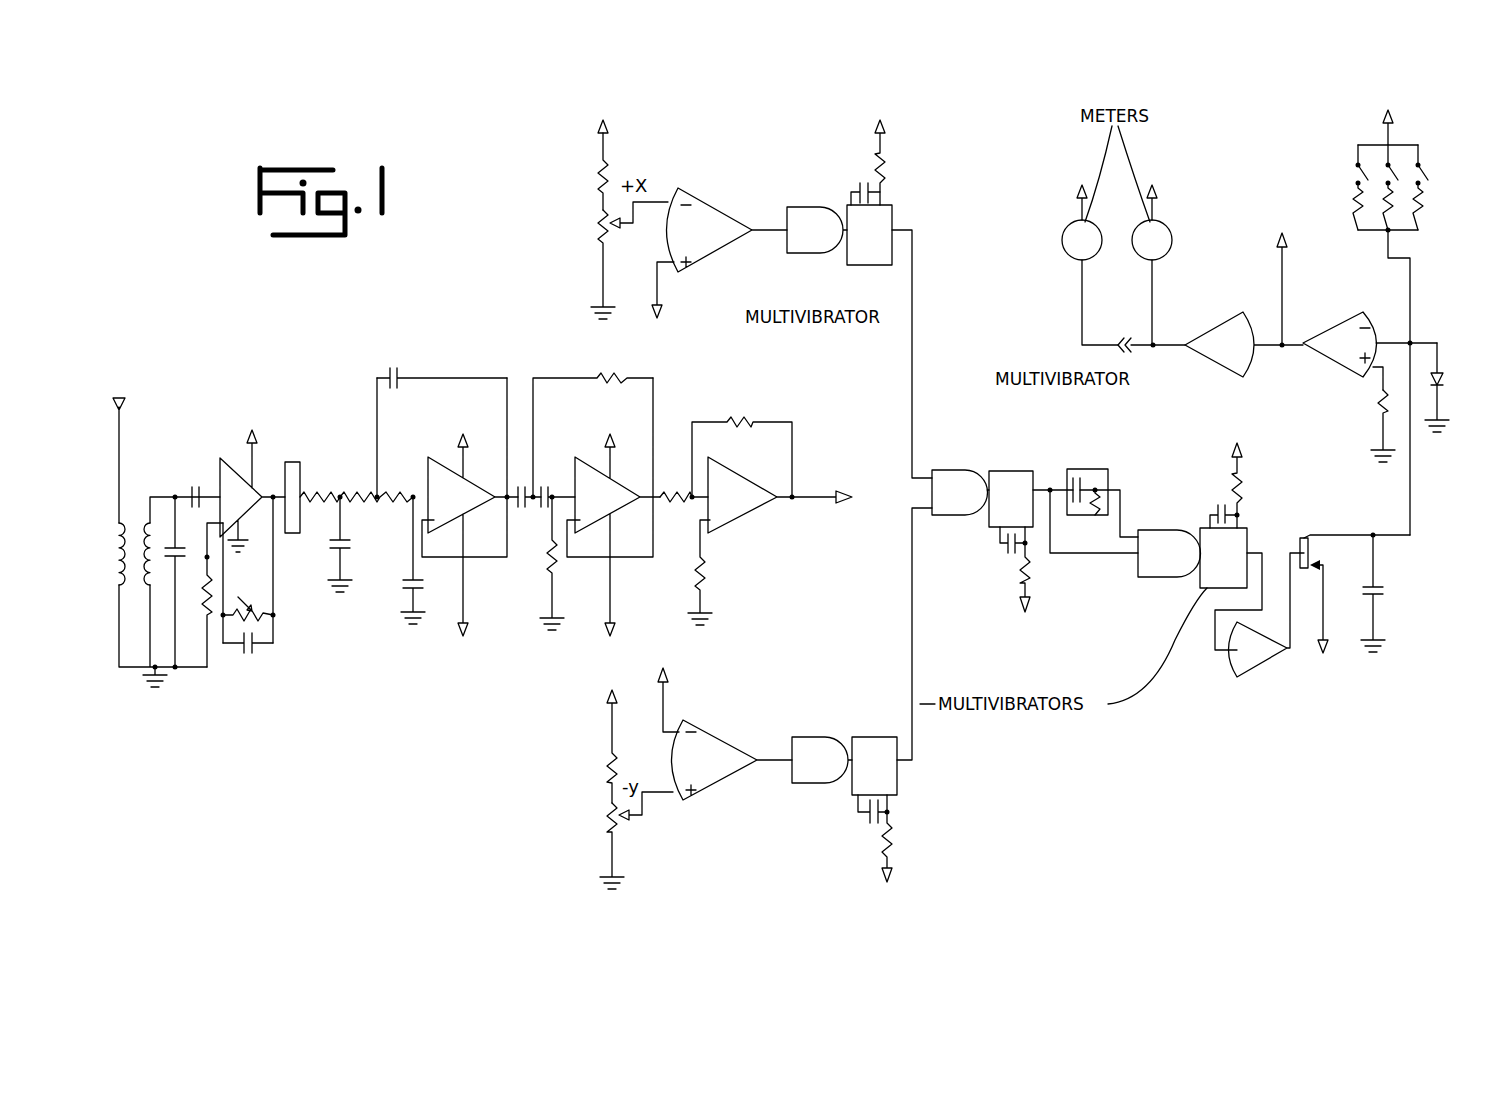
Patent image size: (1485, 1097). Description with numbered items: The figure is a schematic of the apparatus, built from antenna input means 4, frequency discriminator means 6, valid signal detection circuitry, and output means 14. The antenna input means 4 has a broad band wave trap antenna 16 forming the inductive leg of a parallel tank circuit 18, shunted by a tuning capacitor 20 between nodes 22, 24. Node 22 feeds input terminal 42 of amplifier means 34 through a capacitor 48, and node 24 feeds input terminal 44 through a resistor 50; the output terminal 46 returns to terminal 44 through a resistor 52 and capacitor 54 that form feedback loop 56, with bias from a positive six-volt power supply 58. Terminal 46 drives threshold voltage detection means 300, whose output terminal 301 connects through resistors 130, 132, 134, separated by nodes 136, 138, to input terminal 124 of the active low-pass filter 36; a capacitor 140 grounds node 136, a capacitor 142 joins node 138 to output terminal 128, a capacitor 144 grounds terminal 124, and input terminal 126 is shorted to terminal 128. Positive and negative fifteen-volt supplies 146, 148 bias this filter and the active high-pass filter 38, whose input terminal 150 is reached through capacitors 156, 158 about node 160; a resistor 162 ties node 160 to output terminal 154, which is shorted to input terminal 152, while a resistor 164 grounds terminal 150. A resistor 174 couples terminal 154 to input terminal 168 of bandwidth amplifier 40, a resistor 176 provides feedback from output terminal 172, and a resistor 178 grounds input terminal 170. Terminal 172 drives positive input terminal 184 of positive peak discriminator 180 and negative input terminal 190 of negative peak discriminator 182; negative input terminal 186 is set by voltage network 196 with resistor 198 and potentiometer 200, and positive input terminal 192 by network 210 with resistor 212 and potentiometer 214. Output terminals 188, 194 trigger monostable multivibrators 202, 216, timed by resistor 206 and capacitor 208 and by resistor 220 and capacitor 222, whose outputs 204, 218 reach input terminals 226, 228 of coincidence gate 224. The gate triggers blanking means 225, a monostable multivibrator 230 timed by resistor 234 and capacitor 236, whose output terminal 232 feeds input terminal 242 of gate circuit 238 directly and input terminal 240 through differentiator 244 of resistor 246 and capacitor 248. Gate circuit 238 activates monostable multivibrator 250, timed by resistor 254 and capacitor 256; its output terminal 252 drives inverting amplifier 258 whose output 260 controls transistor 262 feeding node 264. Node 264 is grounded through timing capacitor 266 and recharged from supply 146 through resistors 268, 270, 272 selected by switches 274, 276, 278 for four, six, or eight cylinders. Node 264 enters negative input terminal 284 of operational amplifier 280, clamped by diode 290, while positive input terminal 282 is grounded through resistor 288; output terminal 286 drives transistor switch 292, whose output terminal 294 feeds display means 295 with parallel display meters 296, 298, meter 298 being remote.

The antenna input means 4 is at (183, 370).
The frequency discriminator means 6 is at (267, 313).
The output means 14 is at (1414, 335).
The broad band wave trap antenna 16 is at (116, 405).
The parallel tank circuit 18 is at (119, 560).
The tuning capacitor 20 is at (168, 553).
The node 22 is at (190, 487).
The node 24 is at (178, 675).
The amplifier means 34 is at (236, 470).
The active low-pass filter 36 is at (430, 460).
The active high-pass filter 38 is at (588, 460).
The large signal bandwidth amplifier 40 is at (740, 485).
The input terminal 42 is at (200, 490).
The input terminal 44 is at (205, 553).
The output terminal 46 is at (270, 483).
The capacitor 48 is at (188, 470).
The resistor 50 is at (200, 595).
The resistor 52 is at (248, 600).
The capacitor 54 is at (252, 655).
The feedback loop 56 is at (236, 672).
The positive 6-volt power supply 58 is at (255, 440).
The input terminal 124 is at (413, 495).
The input terminal 126 is at (424, 536).
The output terminal 128 is at (498, 508).
The resistor 130 is at (322, 490).
The resistor 132 is at (375, 480).
The resistor 134 is at (408, 540).
The node 136 is at (372, 460).
The node 138 is at (385, 498).
The capacitor 140 is at (333, 560).
The capacitor 142 is at (392, 366).
The capacitor 144 is at (400, 600).
The positive 15-volt power supply 146 is at (463, 445).
The negative 15-volt power supply 148 is at (463, 638).
The input terminal 150 is at (578, 490).
The input terminal 152 is at (570, 536).
The output terminal 154 is at (644, 505).
The capacitor 156 is at (522, 485).
The capacitor 158 is at (545, 485).
The node 160 is at (533, 505).
The resistor 162 is at (612, 372).
The resistor 164 is at (556, 555).
The input terminal 168 is at (700, 505).
The input terminal 170 is at (700, 560).
The output terminal 172 is at (815, 500).
The resistor 174 is at (675, 490).
The resistor 176 is at (740, 418).
The resistor 178 is at (708, 575).
The positive peak discriminator 180 is at (715, 212).
The negative peak discriminator 182 is at (728, 745).
The positive input terminal 184 is at (665, 282).
The negative input terminal 186 is at (670, 200).
The output terminal 188 is at (768, 232).
The negative input terminal 190 is at (678, 712).
The positive input terminal 192 is at (670, 800).
The output terminal 194 is at (775, 765).
The variable reflective voltage network 196 is at (640, 157).
The resistor 198 is at (600, 182).
The potentiometer 200 is at (600, 240).
The monostable multivibrator 202 is at (808, 210).
The output terminal 204 is at (912, 228).
The resistor 206 is at (890, 160).
The capacitor 208 is at (860, 180).
The variable reflective voltage network 210 is at (648, 843).
The resistor 212 is at (605, 768).
The potentiometer 214 is at (608, 815).
The monostable multivibrator 216 is at (825, 740).
The output 218 is at (910, 768).
The resistor 220 is at (895, 845).
The capacitor 222 is at (870, 828).
The coincidence gate 224 is at (955, 512).
The blanking means 225 is at (1005, 462).
The input terminal 226 is at (918, 470).
The input terminal 228 is at (912, 515).
The monostable multivibrator 230 is at (1012, 470).
The output terminal 232 is at (1044, 485).
The resistor 234 is at (1020, 590).
The capacitor 236 is at (1005, 560).
The gate circuit 238 is at (1167, 580).
The input terminal 240 is at (1140, 530).
The input terminal 242 is at (1130, 560).
The passive element differentiator 244 is at (1087, 518).
The resistor 246 is at (1105, 470).
The capacitor 248 is at (1078, 472).
The monostable multivibrator 250 is at (1213, 590).
The output terminal 252 is at (1258, 550).
The resistor 254 is at (1240, 485).
The capacitor 256 is at (1222, 505).
The inverting amplifier 258 is at (1250, 675).
The output 260 is at (1293, 650).
The transistor 262 is at (1312, 548).
The node 264 is at (1373, 533).
The timing capacitor 266 is at (1385, 588).
The resistor 268 is at (1422, 205).
The resistor 270 is at (1378, 230).
The resistor 272 is at (1352, 200).
The switch 274 is at (1425, 170).
The switch 276 is at (1392, 168).
The switch 278 is at (1355, 165).
The high gain operational amplifier 280 is at (1335, 330).
The positive input terminal 282 is at (1375, 385).
The negative input terminal 284 is at (1398, 340).
The output terminal 286 is at (1275, 235).
The resistor 288 is at (1378, 410).
The clamping diode 290 is at (1445, 375).
The transistor switch 292 is at (1232, 315).
The output terminal 294 is at (1170, 342).
The display means 295 is at (1070, 310).
The display meter 296 is at (1163, 226).
The display meter 298 is at (1062, 255).
The threshold voltage detection means 300 is at (284, 462).
The output terminal 301 is at (300, 690).